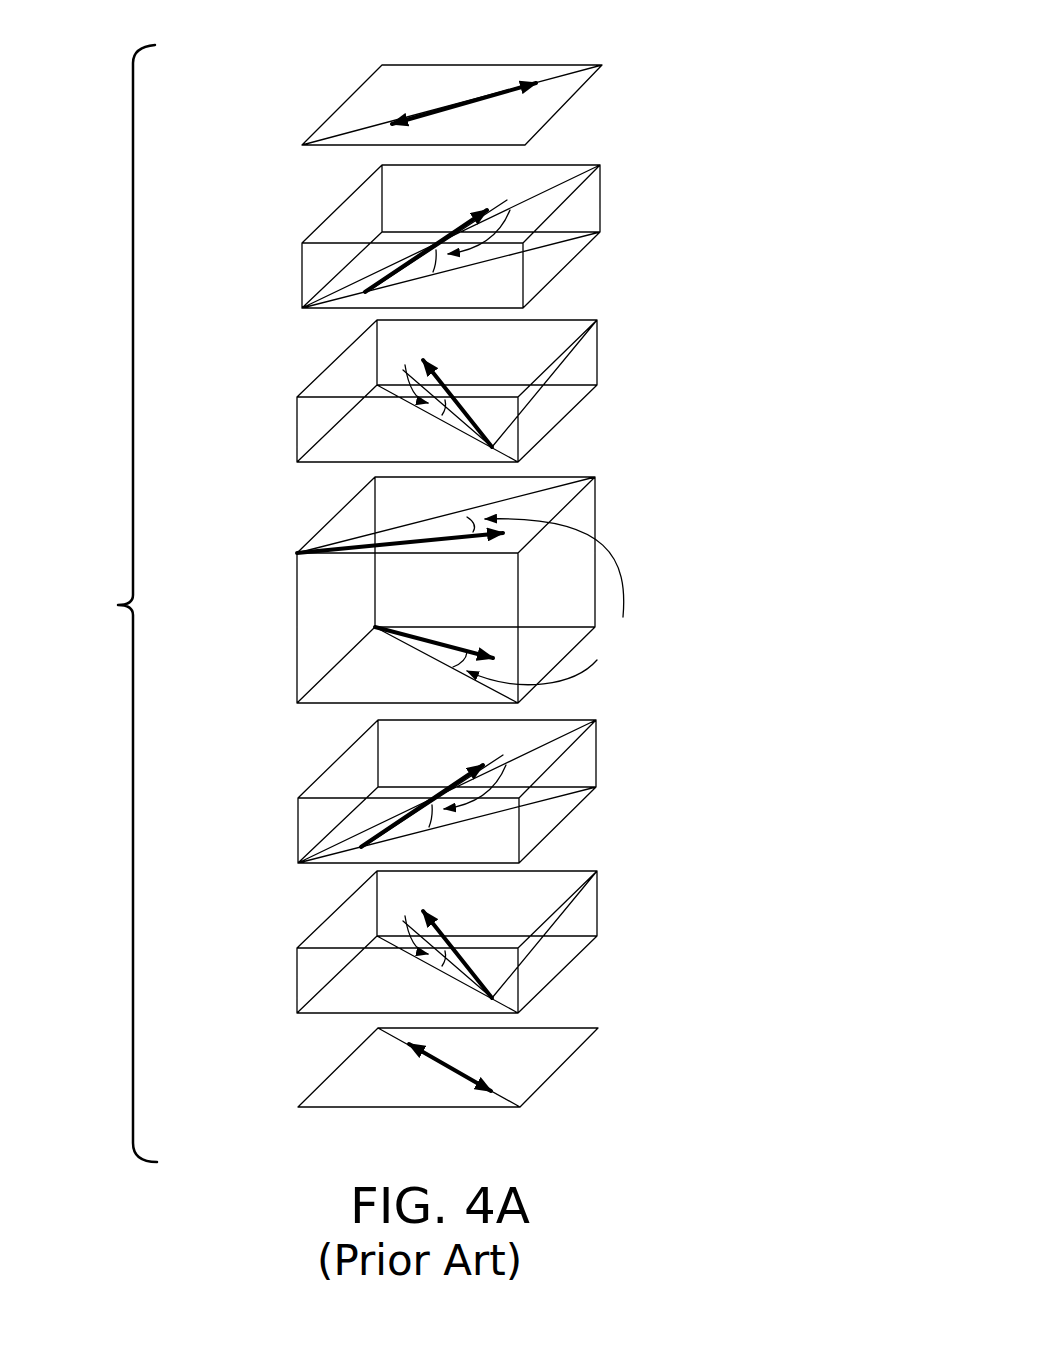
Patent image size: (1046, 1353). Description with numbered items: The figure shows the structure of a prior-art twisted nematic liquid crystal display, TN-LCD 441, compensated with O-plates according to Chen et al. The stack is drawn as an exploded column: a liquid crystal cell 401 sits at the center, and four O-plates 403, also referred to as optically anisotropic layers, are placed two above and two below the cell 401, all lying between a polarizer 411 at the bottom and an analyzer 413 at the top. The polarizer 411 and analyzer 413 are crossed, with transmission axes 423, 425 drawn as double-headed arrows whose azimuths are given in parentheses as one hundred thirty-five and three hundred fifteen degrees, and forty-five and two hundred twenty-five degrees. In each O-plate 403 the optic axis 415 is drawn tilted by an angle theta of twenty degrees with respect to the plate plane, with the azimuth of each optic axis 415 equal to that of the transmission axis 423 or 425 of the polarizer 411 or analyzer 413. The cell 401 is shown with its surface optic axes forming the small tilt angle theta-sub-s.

The TN-LCD 441 is at (112, 603).
The analyzer 413 is at (540, 65).
The transmission axis of the analyzer 425 is at (450, 107).
The O-plate 403 is at (302, 267).
The optic axis 415 is at (455, 227).
The liquid crystal cell 401 is at (297, 633).
The polarizer 411 is at (563, 1027).
The transmission axis of the polarizer 423 is at (440, 1067).